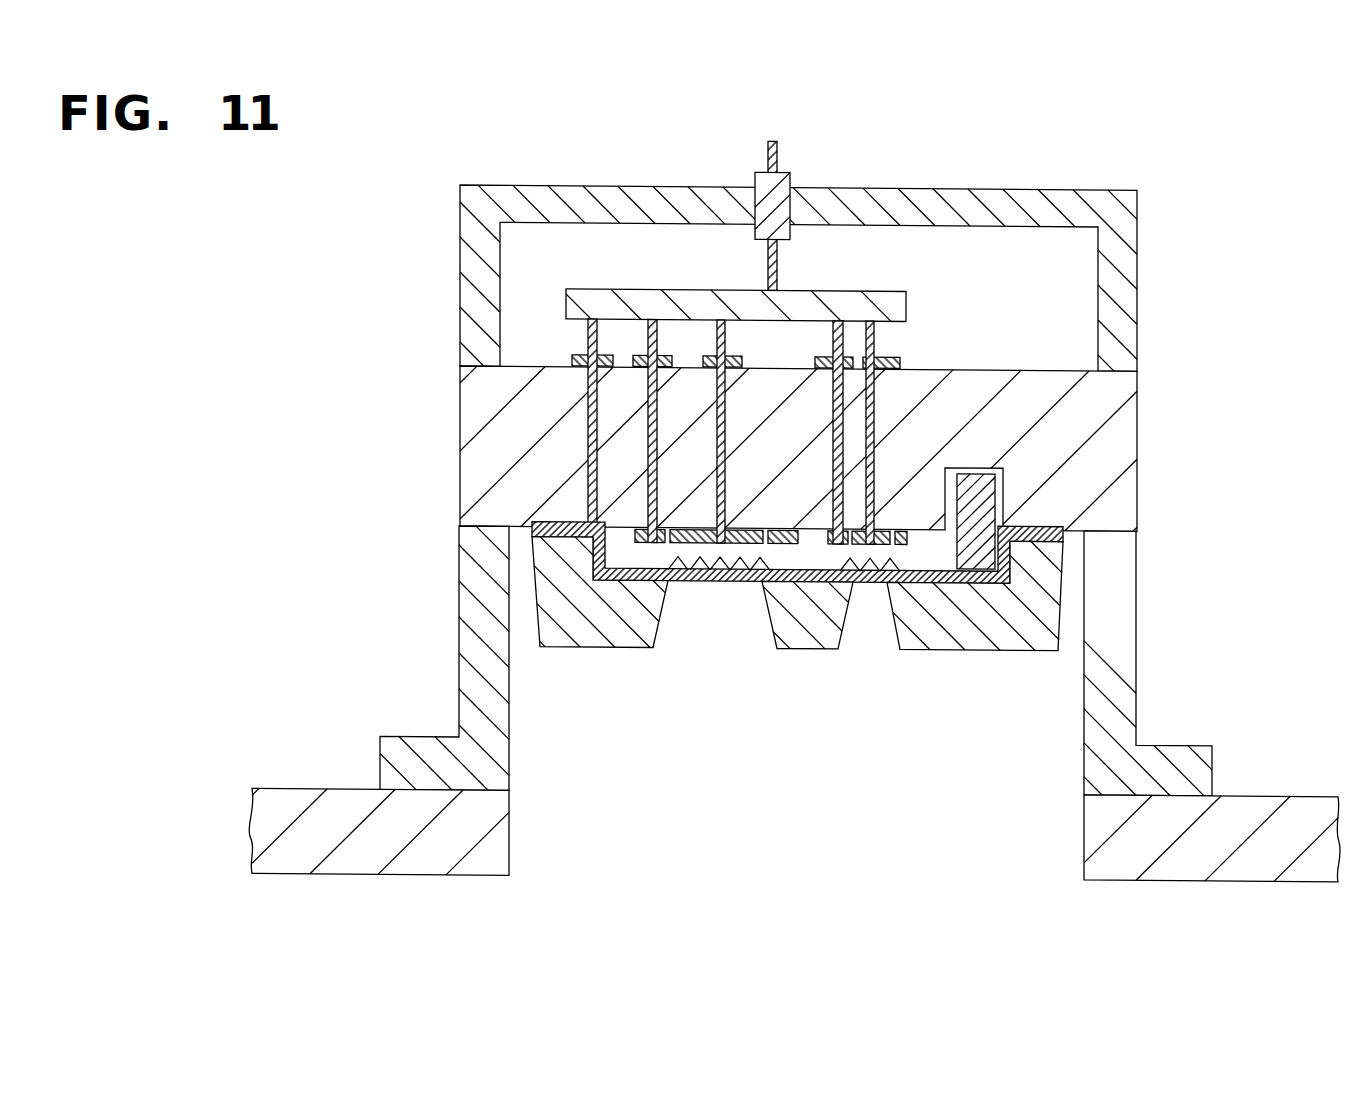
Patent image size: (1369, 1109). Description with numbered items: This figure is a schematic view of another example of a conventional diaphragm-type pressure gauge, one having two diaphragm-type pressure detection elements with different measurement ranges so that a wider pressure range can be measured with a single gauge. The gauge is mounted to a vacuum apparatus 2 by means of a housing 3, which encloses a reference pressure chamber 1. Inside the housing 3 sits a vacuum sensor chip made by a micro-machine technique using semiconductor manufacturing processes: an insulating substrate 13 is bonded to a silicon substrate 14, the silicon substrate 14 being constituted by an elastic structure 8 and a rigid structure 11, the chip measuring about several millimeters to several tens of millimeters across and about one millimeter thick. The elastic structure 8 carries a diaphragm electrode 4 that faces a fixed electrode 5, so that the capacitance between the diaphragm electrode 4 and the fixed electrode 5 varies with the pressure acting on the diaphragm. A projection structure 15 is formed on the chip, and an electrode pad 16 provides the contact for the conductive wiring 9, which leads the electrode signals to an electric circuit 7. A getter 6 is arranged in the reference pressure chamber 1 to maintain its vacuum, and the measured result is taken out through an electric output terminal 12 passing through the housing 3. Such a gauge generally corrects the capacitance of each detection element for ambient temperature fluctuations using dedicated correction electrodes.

The reference pressure chamber 1 is at (630, 553).
The vacuum apparatus 2 is at (372, 868).
The housing 3 is at (466, 648).
The diaphragm electrode 4 is at (760, 581).
The fixed electrode 5 is at (687, 542).
The getter 6 is at (975, 548).
The electric circuit 7 is at (851, 297).
The elastic structure 8 is at (718, 563).
The conductive wiring 9 is at (880, 407).
The rigid structure 11 is at (1043, 616).
The electric output terminal 12 is at (767, 151).
The insulating substrate 13 is at (1125, 484).
The silicon substrate 14 is at (1063, 535).
The projection structure 15 is at (865, 580).
The electrode pad 16 is at (900, 357).